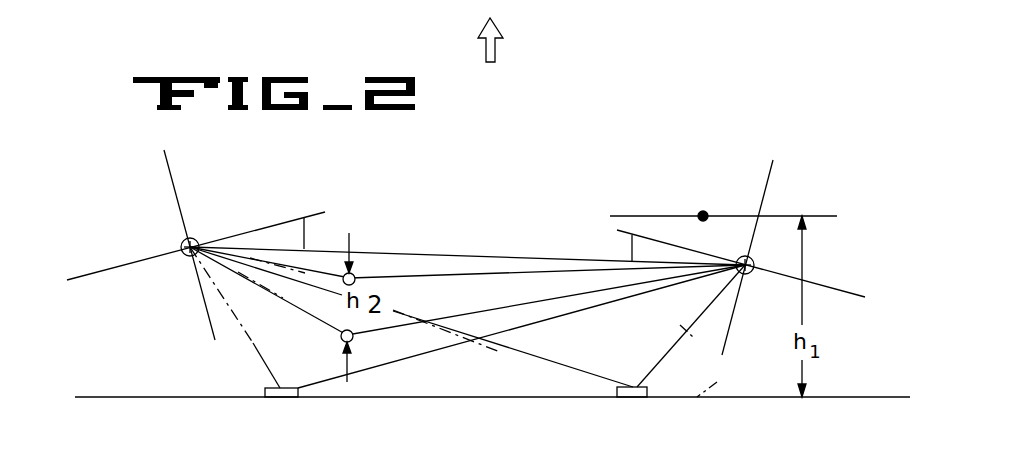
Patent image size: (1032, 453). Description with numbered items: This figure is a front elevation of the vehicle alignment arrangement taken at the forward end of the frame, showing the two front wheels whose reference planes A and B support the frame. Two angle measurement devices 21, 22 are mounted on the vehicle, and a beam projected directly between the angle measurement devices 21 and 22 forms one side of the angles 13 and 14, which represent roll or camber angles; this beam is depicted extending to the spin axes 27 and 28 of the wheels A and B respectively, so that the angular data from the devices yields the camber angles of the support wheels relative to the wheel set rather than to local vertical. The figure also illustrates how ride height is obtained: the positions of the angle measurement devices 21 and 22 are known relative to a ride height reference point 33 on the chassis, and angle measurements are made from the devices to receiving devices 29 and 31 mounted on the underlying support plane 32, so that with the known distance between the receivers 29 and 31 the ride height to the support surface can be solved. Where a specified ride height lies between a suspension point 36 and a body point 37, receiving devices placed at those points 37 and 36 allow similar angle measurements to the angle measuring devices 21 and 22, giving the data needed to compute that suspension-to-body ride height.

The camber angle 13 is at (306, 230).
The camber angle 14 is at (632, 247).
The angle measurement device 21 is at (753, 274).
The angle measurement device 22 is at (197, 240).
The spin axis 27 is at (828, 286).
The spin axis 28 is at (128, 262).
The receiving device 29 is at (652, 387).
The receiving device 31 is at (266, 388).
The support plane 32 is at (870, 396).
The ride height reference point 33 is at (703, 212).
The suspension point 36 is at (356, 275).
The body point 37 is at (341, 337).
The front wheel plane A is at (775, 178).
The front wheel plane B is at (170, 176).